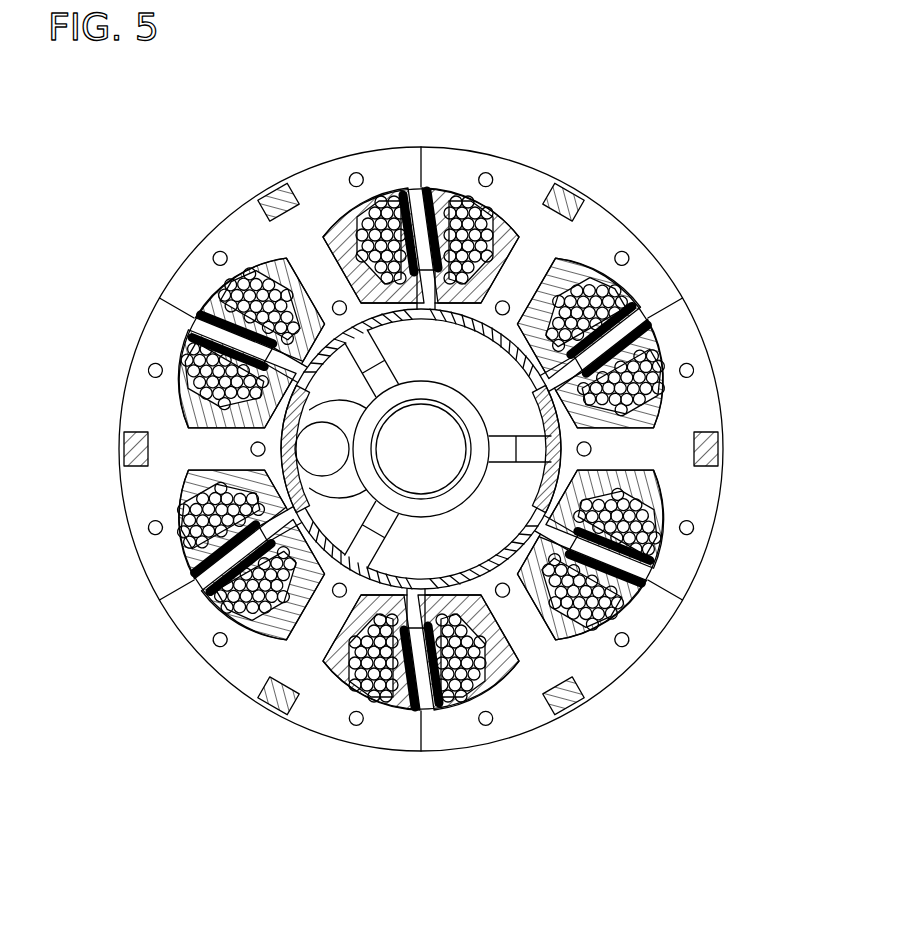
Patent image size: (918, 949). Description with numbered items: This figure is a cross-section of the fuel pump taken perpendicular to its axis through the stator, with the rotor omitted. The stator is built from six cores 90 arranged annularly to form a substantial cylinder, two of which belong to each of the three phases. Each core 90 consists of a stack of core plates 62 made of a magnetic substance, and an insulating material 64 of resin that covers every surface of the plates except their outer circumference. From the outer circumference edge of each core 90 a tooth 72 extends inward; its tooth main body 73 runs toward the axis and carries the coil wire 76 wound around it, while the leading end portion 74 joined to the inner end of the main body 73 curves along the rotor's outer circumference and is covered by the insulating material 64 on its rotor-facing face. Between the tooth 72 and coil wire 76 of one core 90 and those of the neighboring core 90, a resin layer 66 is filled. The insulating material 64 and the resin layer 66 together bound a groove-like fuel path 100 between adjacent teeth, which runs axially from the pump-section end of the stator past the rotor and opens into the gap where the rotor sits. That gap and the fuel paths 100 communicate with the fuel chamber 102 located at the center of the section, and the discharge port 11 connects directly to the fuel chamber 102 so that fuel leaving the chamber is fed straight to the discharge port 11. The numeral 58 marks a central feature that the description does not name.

The discharge port 11 is at (319, 452).
The hub 58 is at (473, 423).
The core plates 62 is at (617, 240).
The insulating material 64 is at (673, 362).
The resin layer 66 is at (630, 570).
The tooth 72 is at (465, 430).
The tooth main body 73 is at (527, 283).
The leading end portion 74 is at (592, 358).
The coil wire 76 is at (493, 212).
The core 90 is at (260, 170).
The fuel path 100 is at (468, 212).
The fuel chamber 102 is at (493, 531).